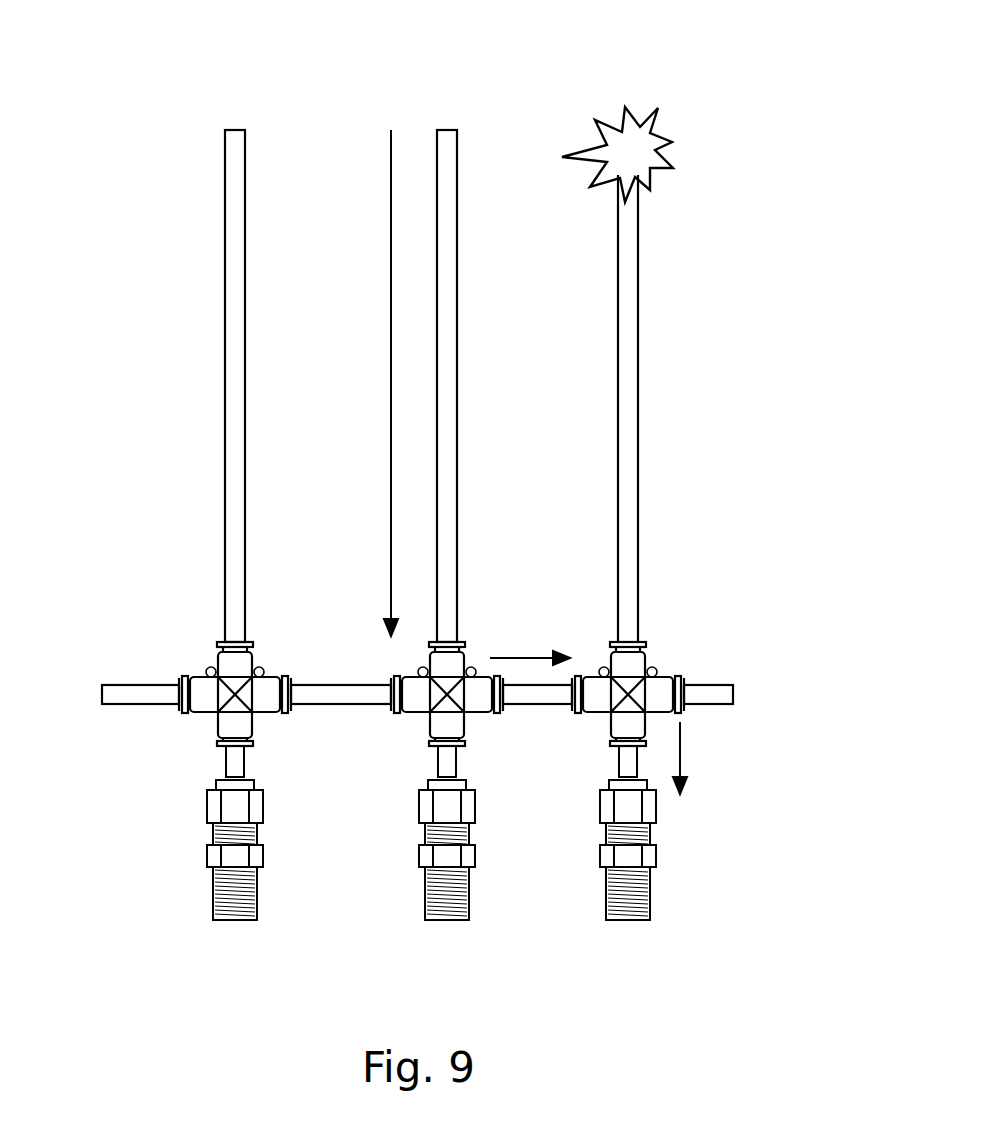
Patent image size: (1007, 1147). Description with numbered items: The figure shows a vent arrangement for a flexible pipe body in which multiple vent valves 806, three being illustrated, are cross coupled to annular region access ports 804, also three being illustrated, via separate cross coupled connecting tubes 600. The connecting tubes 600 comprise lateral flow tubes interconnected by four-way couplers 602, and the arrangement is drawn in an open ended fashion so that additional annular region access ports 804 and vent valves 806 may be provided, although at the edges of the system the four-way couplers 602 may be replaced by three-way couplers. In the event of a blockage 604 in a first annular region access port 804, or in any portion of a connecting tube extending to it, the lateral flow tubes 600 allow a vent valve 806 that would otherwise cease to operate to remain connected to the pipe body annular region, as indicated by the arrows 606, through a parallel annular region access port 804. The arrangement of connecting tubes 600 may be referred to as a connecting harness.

The connecting tubes 600 is at (116, 692).
The four-way couplers 602 is at (233, 688).
The blockage 604 is at (628, 140).
The arrows 606 is at (391, 190).
The annular region access ports 804 is at (225, 190).
The vent valves 806 is at (235, 905).